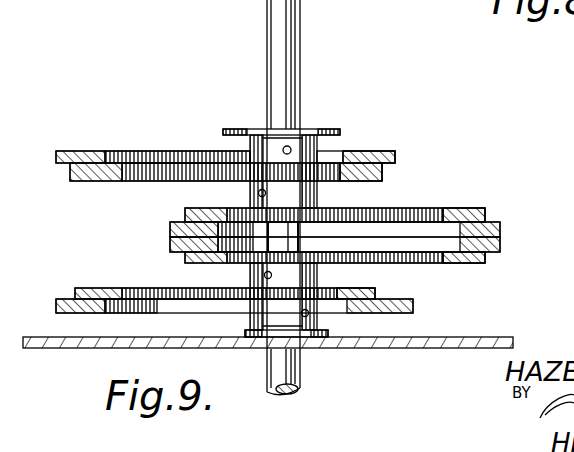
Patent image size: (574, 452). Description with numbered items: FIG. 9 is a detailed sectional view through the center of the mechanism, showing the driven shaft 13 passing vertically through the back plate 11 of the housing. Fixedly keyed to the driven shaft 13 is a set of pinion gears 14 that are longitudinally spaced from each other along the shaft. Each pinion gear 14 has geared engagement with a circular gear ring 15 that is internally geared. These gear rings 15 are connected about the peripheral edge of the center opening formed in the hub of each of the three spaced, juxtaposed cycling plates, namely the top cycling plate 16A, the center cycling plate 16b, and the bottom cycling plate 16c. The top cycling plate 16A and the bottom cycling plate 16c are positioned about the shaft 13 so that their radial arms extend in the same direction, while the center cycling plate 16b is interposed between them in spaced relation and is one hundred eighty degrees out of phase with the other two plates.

The back plate 11 is at (383, 348).
The driven shaft 13 is at (300, 72).
The pinion gears 14 is at (322, 182).
The gear rings 15 is at (383, 175).
The top cycling plate 16A is at (360, 150).
The center cycling plate 16b is at (500, 225).
The bottom cycling plate 16c is at (413, 312).